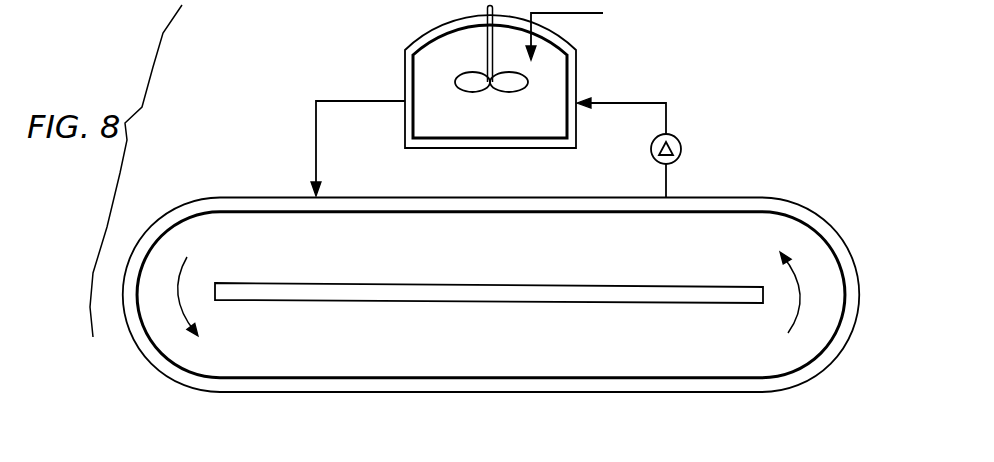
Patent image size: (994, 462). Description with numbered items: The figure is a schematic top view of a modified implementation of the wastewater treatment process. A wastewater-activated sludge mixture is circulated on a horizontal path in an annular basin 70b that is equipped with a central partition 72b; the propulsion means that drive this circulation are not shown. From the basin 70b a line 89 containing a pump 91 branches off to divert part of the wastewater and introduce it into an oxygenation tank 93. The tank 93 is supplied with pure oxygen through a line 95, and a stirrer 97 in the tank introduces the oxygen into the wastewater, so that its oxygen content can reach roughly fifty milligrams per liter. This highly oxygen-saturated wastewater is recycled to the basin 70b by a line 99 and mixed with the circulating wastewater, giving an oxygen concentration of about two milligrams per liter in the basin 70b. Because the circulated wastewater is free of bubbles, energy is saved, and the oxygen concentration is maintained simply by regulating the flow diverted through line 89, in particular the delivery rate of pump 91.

The basin 70b is at (275, 380).
The partition 72b is at (477, 302).
The line 89 is at (667, 180).
The pump 91 is at (673, 141).
The oxygenation tank 93 is at (574, 64).
The line 95 is at (603, 13).
The stirrer 97 is at (472, 88).
The line 99 is at (316, 139).